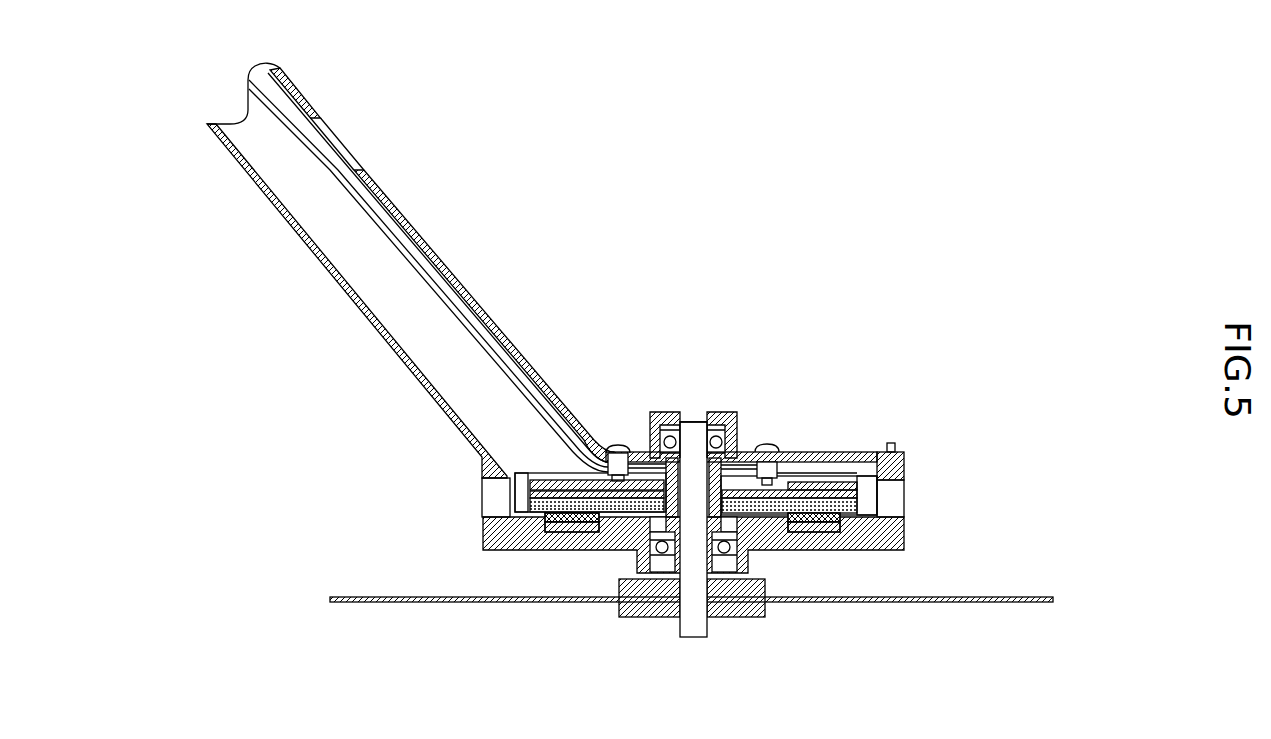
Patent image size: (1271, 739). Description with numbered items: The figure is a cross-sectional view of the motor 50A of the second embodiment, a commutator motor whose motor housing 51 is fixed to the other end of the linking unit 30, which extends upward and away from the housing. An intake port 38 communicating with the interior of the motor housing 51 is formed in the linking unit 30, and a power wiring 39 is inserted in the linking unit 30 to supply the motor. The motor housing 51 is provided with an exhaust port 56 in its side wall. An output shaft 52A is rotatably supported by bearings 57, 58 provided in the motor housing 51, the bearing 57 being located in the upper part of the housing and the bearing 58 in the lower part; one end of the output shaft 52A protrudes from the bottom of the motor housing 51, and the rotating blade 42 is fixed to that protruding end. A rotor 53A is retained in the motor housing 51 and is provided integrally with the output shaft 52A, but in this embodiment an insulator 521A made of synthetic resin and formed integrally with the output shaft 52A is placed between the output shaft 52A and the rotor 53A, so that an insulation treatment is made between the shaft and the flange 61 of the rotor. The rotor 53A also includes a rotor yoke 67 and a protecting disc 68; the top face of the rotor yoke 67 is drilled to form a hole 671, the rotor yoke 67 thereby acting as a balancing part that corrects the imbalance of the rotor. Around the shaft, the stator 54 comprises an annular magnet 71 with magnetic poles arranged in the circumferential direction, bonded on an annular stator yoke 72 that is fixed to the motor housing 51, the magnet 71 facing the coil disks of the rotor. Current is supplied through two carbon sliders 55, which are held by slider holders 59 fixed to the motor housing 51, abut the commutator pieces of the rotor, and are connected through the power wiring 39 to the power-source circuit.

The linking unit 30 is at (310, 320).
The intake port 38 is at (340, 140).
The power wiring 39 is at (456, 278).
The rotating blade 42 is at (1027, 603).
The motor 50A is at (974, 299).
The motor housing 51 is at (487, 538).
The output shaft 52A is at (693, 433).
The insulator 521A is at (704, 422).
The rotor 53A is at (812, 480).
The stator 54 is at (950, 533).
The slider 55 is at (619, 446).
The exhaust port 56 is at (486, 494).
The bearing 57 is at (662, 415).
The bearing 58 is at (655, 557).
The slider holder 59 is at (628, 447).
The flange 61 is at (728, 433).
The rotor yoke 67 is at (562, 483).
The hole 671 is at (582, 492).
The protecting disc 68 is at (521, 477).
The magnet 71 is at (827, 532).
The stator yoke 72 is at (802, 531).